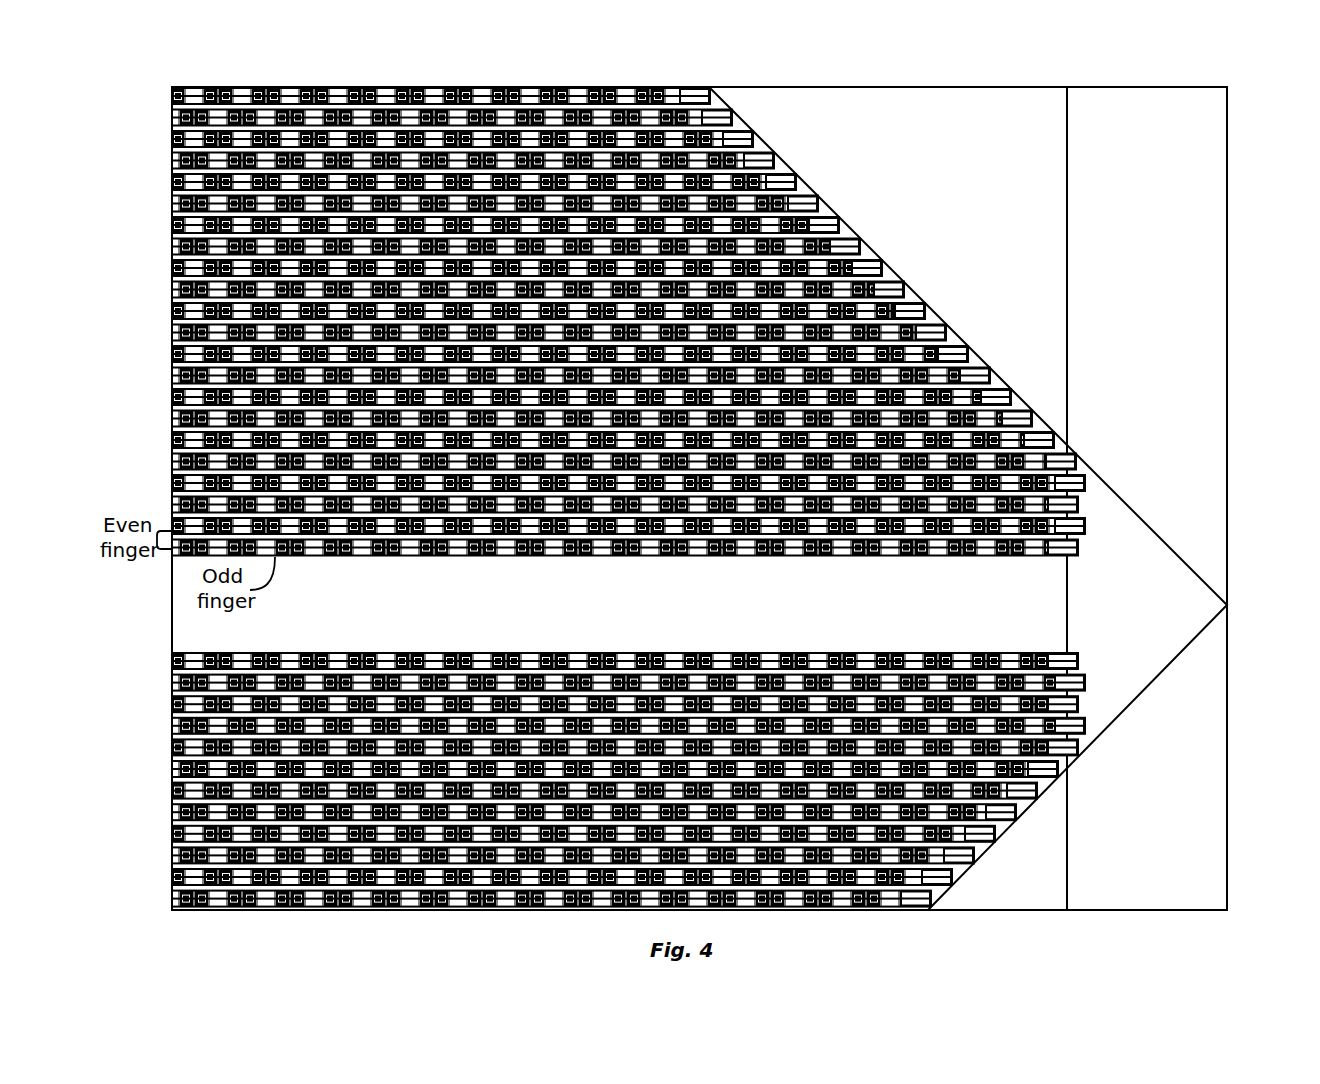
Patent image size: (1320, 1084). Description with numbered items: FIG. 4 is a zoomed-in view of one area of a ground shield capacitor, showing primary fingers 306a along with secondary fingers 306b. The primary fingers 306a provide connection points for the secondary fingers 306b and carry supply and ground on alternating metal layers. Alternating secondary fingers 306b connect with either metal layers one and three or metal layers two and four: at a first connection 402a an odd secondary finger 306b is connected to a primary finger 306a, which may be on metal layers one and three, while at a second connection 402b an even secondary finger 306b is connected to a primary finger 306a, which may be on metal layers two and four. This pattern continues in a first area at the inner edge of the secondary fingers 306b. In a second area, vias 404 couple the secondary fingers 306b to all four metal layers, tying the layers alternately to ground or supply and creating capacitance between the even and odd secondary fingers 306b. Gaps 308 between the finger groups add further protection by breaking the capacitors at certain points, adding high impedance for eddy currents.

The primary fingers 306a is at (996, 215).
The secondary fingers 306b is at (170, 88).
The gaps 308 is at (436, 604).
The first connection 402a is at (1089, 539).
The second connection 402b is at (1089, 517).
The vias 404 is at (893, 556).